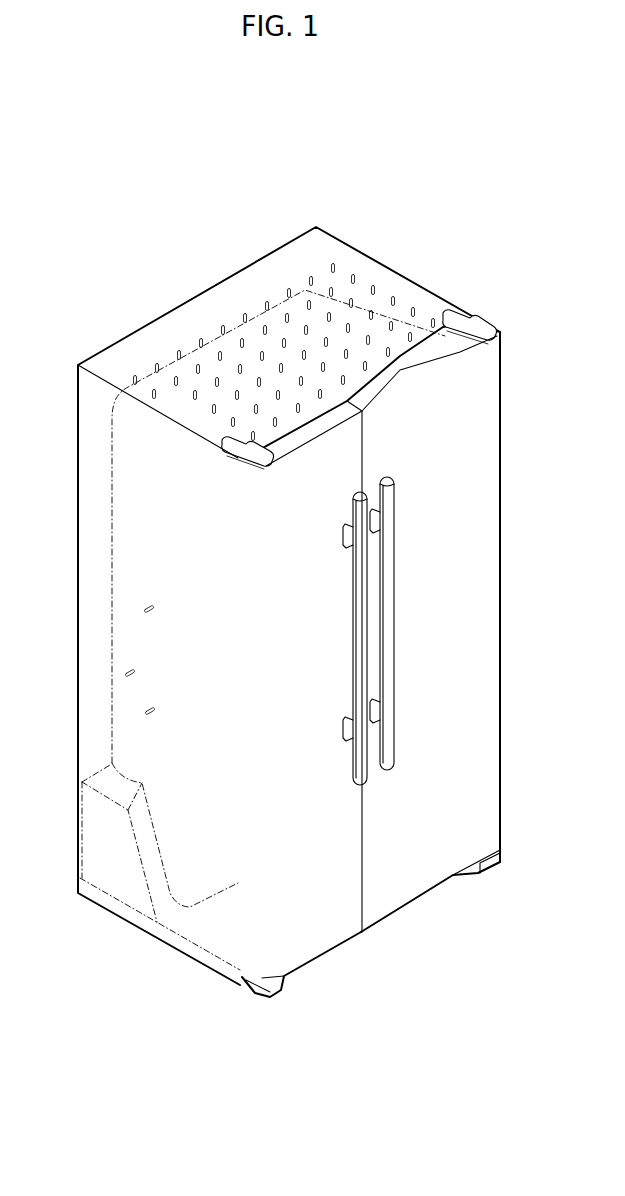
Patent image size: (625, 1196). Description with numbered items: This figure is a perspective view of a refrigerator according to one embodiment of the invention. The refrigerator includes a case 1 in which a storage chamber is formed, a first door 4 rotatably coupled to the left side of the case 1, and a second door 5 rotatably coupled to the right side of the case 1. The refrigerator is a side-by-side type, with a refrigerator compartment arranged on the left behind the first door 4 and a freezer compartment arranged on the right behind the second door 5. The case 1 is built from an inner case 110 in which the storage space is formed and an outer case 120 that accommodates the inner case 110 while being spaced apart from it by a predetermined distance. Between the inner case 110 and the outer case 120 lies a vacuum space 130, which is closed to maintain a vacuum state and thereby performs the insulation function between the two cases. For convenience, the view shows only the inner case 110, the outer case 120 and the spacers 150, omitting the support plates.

The case 1 is at (197, 280).
The first door 4 is at (310, 933).
The second door 5 is at (410, 877).
The inner case 110 is at (147, 615).
The outer case 120 is at (88, 480).
The vacuum space 130 is at (100, 577).
The spacers 150 is at (150, 705).